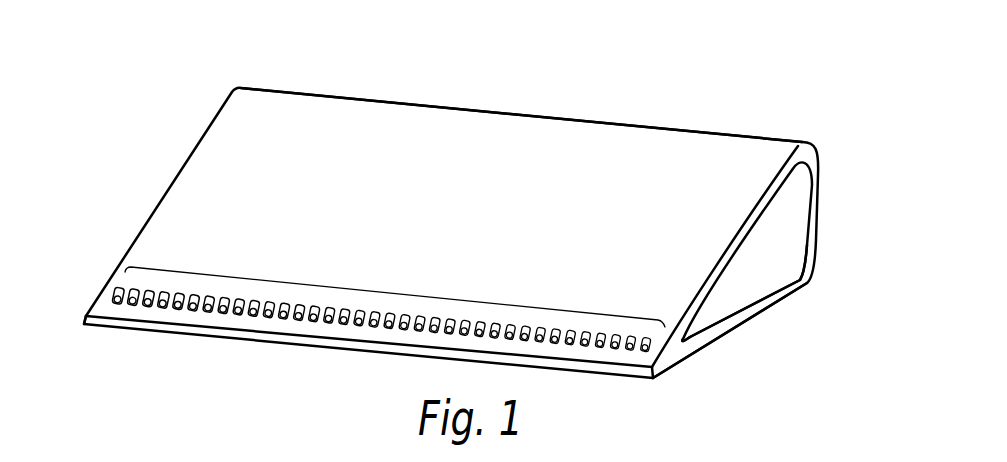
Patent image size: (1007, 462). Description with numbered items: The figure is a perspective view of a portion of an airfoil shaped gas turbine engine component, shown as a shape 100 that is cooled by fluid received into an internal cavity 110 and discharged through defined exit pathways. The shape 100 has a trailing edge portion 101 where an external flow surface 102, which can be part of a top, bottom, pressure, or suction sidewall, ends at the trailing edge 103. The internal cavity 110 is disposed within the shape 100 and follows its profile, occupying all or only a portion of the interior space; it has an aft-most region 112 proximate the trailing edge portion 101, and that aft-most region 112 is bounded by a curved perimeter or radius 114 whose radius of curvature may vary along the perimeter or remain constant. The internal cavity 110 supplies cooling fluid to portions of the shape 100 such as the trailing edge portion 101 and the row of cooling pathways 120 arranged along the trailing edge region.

The shape 100 is at (718, 66).
The trailing edge portion 101 is at (675, 357).
The external flow surface 102 is at (168, 226).
The trailing edge 103 is at (84, 322).
The internal cavity 110 is at (783, 252).
The aft-most region 112 is at (768, 312).
The curved perimeter or radius 114 is at (700, 331).
The cooling pathways 120 is at (401, 295).